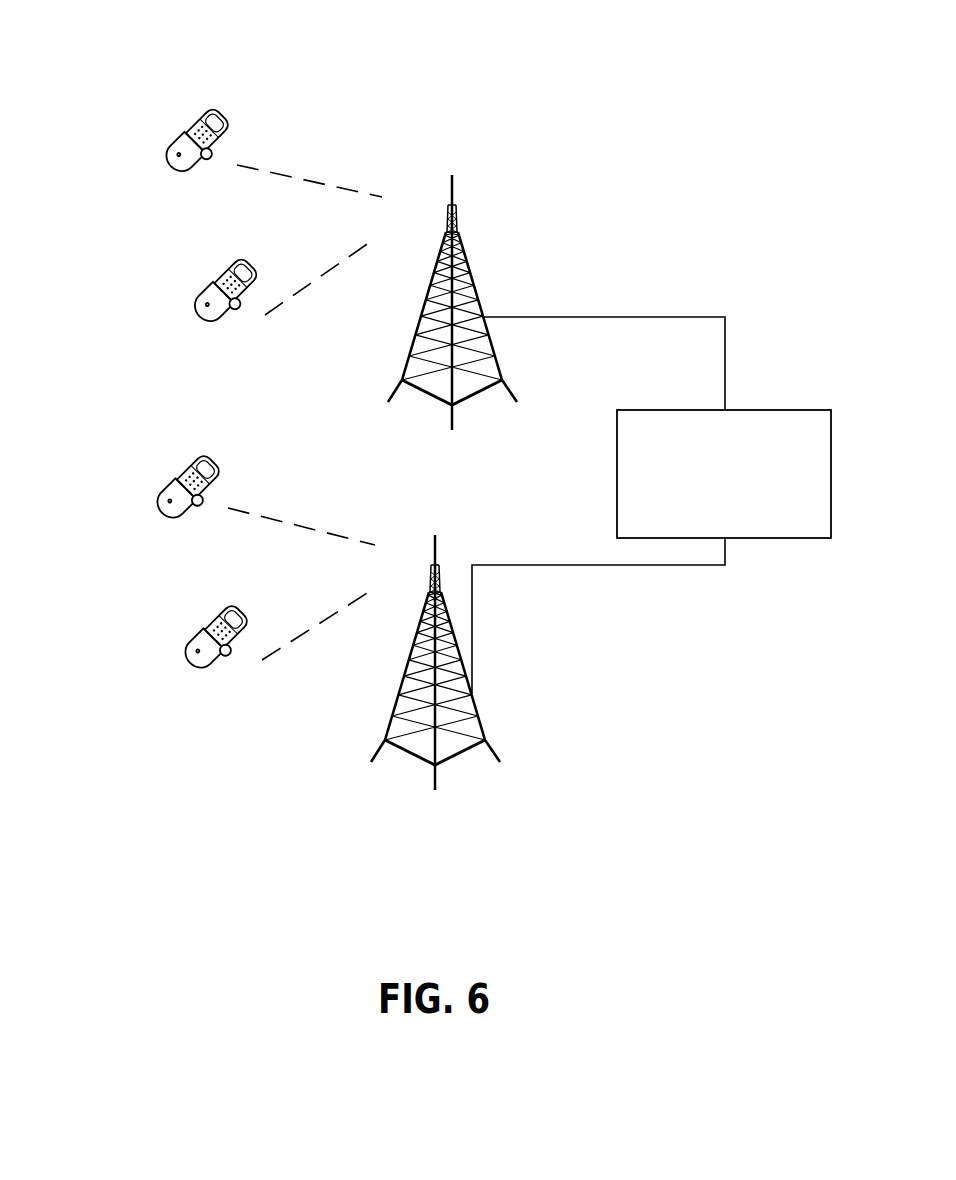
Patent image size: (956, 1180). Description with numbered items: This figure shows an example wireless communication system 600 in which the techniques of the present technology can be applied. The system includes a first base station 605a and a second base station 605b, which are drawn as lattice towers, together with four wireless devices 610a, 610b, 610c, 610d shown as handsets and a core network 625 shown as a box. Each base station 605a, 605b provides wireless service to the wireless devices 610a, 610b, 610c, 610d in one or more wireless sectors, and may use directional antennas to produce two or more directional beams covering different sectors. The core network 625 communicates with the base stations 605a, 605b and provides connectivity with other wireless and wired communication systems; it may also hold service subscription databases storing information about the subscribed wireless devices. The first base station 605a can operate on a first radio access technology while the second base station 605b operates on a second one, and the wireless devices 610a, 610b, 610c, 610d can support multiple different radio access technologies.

The wireless communication system 600 is at (78, 31).
The first base station 605a is at (466, 258).
The second base station 605b is at (443, 576).
The wireless device 610a is at (190, 112).
The wireless device 610b is at (220, 262).
The wireless device 610c is at (295, 448).
The wireless device 610d is at (210, 609).
The core network 625 is at (632, 410).